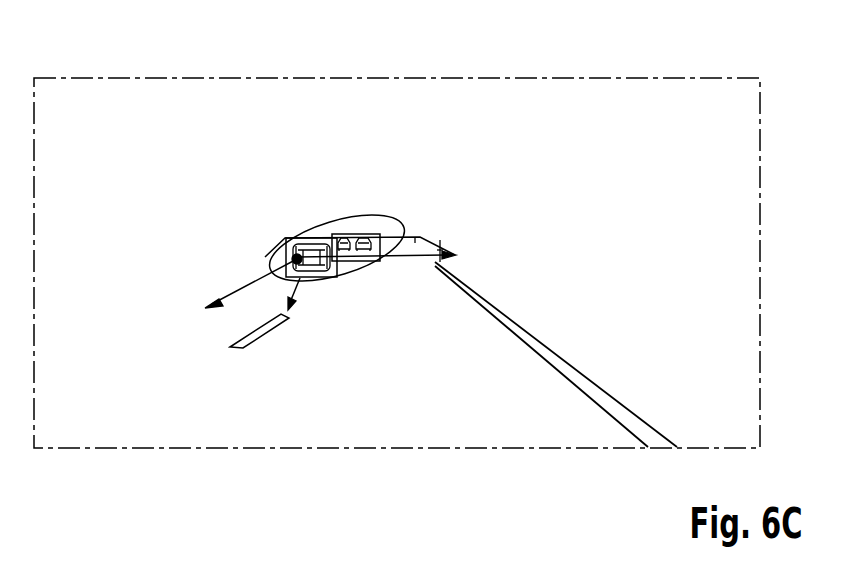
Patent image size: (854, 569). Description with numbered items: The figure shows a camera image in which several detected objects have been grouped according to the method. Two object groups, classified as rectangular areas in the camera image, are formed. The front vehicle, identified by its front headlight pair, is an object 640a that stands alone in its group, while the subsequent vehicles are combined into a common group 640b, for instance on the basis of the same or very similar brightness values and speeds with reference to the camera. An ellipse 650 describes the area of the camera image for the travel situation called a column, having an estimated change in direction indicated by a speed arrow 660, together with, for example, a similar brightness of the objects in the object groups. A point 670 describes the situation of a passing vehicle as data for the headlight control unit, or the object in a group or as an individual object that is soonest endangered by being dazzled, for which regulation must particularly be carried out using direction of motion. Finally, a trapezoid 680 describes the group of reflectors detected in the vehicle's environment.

The object 640a is at (327, 240).
The common group 640b is at (358, 267).
The ellipse 650 is at (370, 213).
The speed arrow 660 is at (297, 287).
The point 670 is at (280, 254).
The trapezoid 680 is at (430, 240).